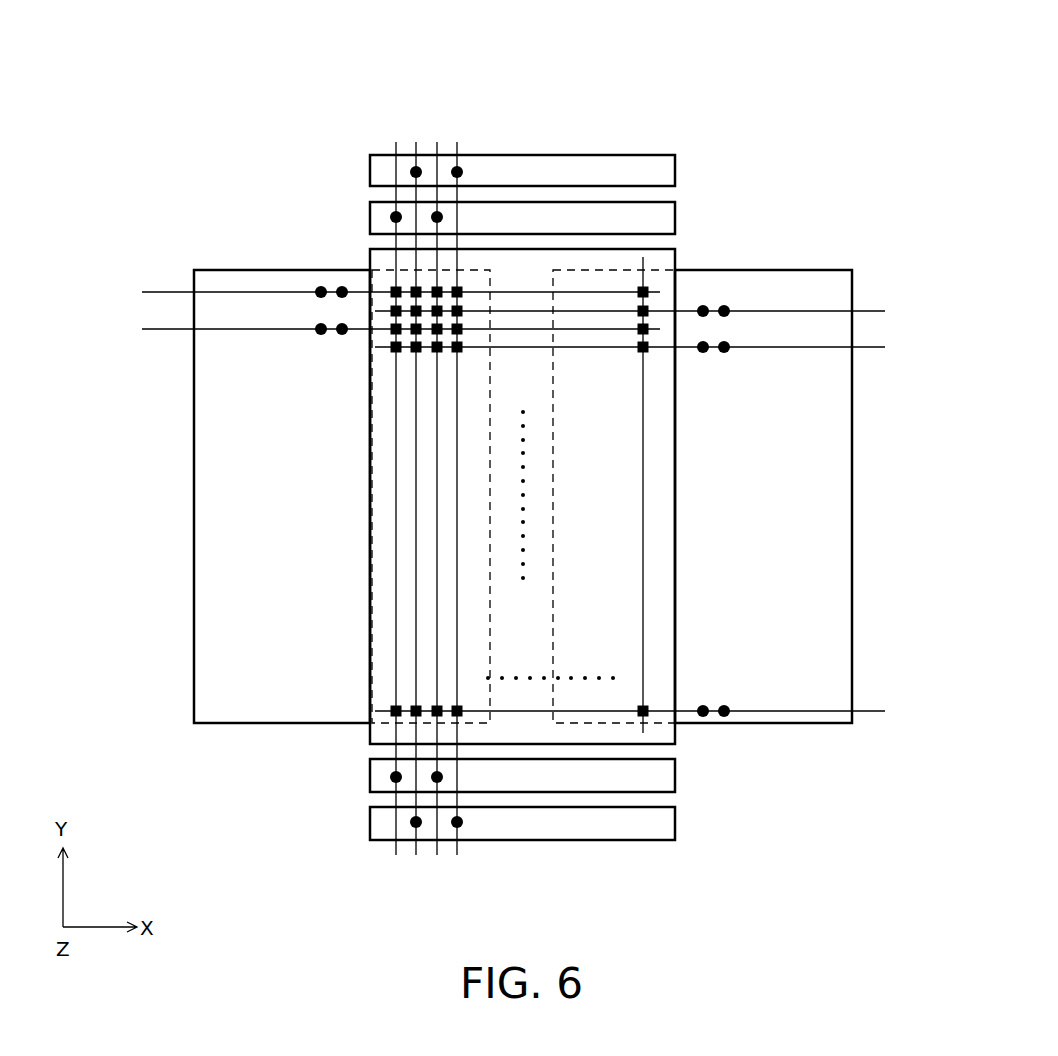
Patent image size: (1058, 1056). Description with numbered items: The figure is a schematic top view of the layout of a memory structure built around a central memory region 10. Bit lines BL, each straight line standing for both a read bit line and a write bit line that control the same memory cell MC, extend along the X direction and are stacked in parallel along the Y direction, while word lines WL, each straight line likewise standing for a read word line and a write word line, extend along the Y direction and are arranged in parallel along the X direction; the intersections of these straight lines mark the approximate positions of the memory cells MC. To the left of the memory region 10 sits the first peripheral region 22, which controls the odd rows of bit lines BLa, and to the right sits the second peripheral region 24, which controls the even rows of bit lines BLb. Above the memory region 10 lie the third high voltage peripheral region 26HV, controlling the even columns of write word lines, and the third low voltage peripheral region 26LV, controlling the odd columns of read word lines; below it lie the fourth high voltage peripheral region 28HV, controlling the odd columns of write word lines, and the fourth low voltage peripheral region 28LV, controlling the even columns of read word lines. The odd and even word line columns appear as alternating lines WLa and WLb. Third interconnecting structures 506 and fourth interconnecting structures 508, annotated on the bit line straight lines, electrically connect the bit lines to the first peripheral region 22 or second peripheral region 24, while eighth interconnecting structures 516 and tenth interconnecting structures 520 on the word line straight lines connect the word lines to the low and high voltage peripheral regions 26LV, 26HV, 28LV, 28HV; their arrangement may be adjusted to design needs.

The memory region 10 is at (368, 258).
The first peripheral region 22 is at (222, 270).
The second peripheral region 24 is at (820, 268).
The third high voltage peripheral region 26HV is at (677, 168).
The third low voltage peripheral region 26LV is at (677, 213).
The fourth high voltage peripheral region 28HV is at (677, 778).
The fourth low voltage peripheral region 28LV is at (677, 824).
The third interconnecting structure 506 is at (318, 287).
The fourth interconnecting structure 508 is at (341, 286).
The eighth interconnecting structure 516 is at (390, 216).
The tenth interconnecting structure 520 is at (413, 168).
The memory cell MC is at (382, 356).
The word line WL is at (122, 508).
The odd column word line WLa is at (395, 402).
The even column word line WLb is at (416, 433).
The bit line BL is at (658, 102).
The odd row bit line BLa is at (477, 292).
The even row bit line BLb is at (497, 312).